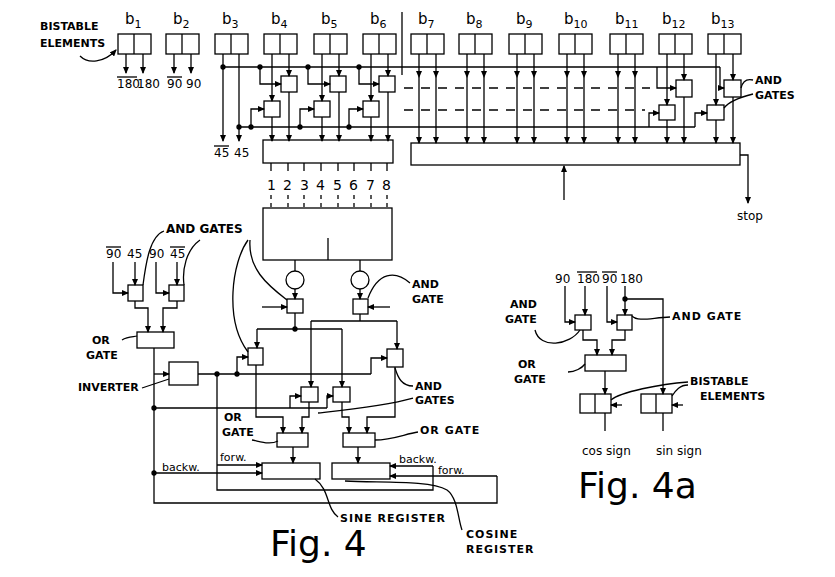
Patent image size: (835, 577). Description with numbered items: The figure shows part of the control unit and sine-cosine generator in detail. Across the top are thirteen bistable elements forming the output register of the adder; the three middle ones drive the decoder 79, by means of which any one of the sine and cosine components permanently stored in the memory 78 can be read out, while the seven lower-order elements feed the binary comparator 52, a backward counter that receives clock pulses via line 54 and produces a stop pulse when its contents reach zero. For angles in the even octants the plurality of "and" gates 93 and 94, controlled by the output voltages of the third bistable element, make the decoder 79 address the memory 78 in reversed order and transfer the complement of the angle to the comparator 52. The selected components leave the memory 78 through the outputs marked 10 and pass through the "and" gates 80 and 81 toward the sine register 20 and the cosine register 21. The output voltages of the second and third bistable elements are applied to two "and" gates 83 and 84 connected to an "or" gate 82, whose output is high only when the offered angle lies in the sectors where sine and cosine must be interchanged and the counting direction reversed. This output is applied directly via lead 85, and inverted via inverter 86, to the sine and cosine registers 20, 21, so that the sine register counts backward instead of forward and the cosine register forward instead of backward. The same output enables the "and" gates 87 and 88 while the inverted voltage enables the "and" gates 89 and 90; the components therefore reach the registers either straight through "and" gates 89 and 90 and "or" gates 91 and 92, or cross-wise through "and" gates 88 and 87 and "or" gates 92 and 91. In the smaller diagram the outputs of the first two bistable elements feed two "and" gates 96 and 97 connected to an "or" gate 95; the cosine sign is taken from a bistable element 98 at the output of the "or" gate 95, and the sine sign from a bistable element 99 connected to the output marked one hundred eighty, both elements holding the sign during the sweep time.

In FIG. 4, the "and" gates 94 is at (527, 88).
In FIG. 4, the "and" gates 93 is at (524, 110).
In FIG. 4, the decoder 79 is at (389, 162).
In FIG. 4, the binary comparator 52 is at (468, 166).
In FIG. 4, the line 54 is at (575, 184).
In FIG. 4, the memory 78 is at (392, 230).
In FIG. 4, the ten-bit output 10 is at (327, 274).
In FIG. 4, the "and" gate 80 is at (286, 307).
In FIG. 4, the "and" gate 81 is at (371, 307).
In FIG. 4, the "or" gate 82 is at (166, 341).
In FIG. 4, the "and" gate 83 is at (127, 297).
In FIG. 4, the "and" gate 84 is at (180, 297).
In FIG. 4, the lead 85 is at (314, 425).
In FIG. 4, the inverter 86 is at (196, 362).
In FIG. 4, the "and" gate 87 is at (299, 405).
In FIG. 4, the "and" gate 88 is at (349, 405).
In FIG. 4, the "and" gate 89 is at (266, 390).
In FIG. 4, the "and" gate 90 is at (395, 391).
In FIG. 4, the "or" gate 91 is at (281, 448).
In FIG. 4, the "or" gate 92 is at (369, 448).
In FIG. 4, the sine register 20 is at (310, 463).
In FIG. 4, the cosine register 21 is at (378, 463).
In FIG. 4A, the "and" gate 96 is at (576, 320).
In FIG. 4A, the "and" gate 97 is at (629, 320).
In FIG. 4A, the "or" gate 95 is at (616, 374).
In FIG. 4A, the bistable element 98 is at (594, 414).
In FIG. 4A, the bistable element 99 is at (654, 414).